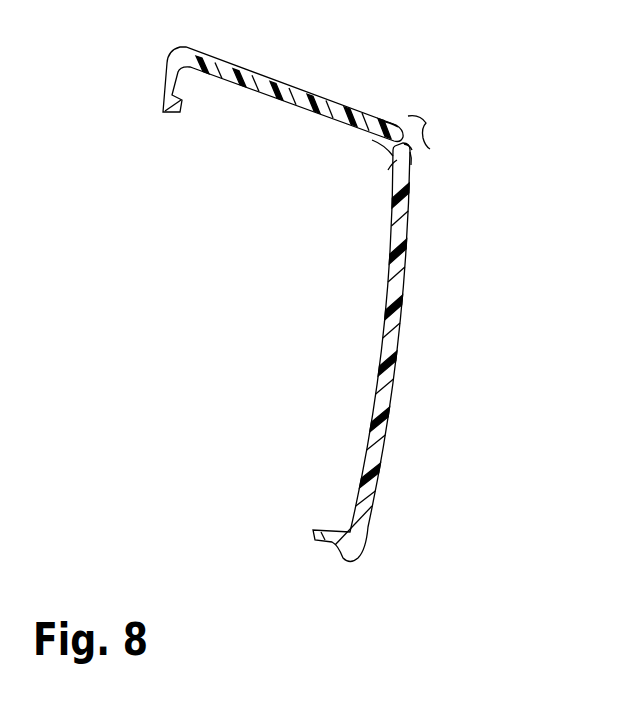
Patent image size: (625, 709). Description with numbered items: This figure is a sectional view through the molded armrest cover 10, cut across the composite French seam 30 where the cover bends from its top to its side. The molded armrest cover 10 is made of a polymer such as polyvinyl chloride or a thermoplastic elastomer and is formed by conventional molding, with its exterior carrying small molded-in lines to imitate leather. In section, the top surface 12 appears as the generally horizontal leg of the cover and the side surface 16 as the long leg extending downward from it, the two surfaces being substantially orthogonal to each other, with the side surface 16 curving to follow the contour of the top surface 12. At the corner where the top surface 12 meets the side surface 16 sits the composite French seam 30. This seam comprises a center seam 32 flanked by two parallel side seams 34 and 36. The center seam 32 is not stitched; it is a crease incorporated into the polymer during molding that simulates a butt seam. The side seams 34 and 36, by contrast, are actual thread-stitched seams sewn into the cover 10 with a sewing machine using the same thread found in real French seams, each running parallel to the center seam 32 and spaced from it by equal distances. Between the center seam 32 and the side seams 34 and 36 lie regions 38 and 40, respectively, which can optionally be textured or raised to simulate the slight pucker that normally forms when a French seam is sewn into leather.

The molded armrest cover 10 is at (496, 98).
The top surface 12 is at (378, 412).
The side surface 16 is at (293, 93).
The composite French seam 30 is at (433, 129).
The center seam 32 is at (411, 148).
The side seam 34 is at (388, 124).
The side seam 36 is at (413, 156).
The region 38 is at (383, 143).
The region 40 is at (391, 164).